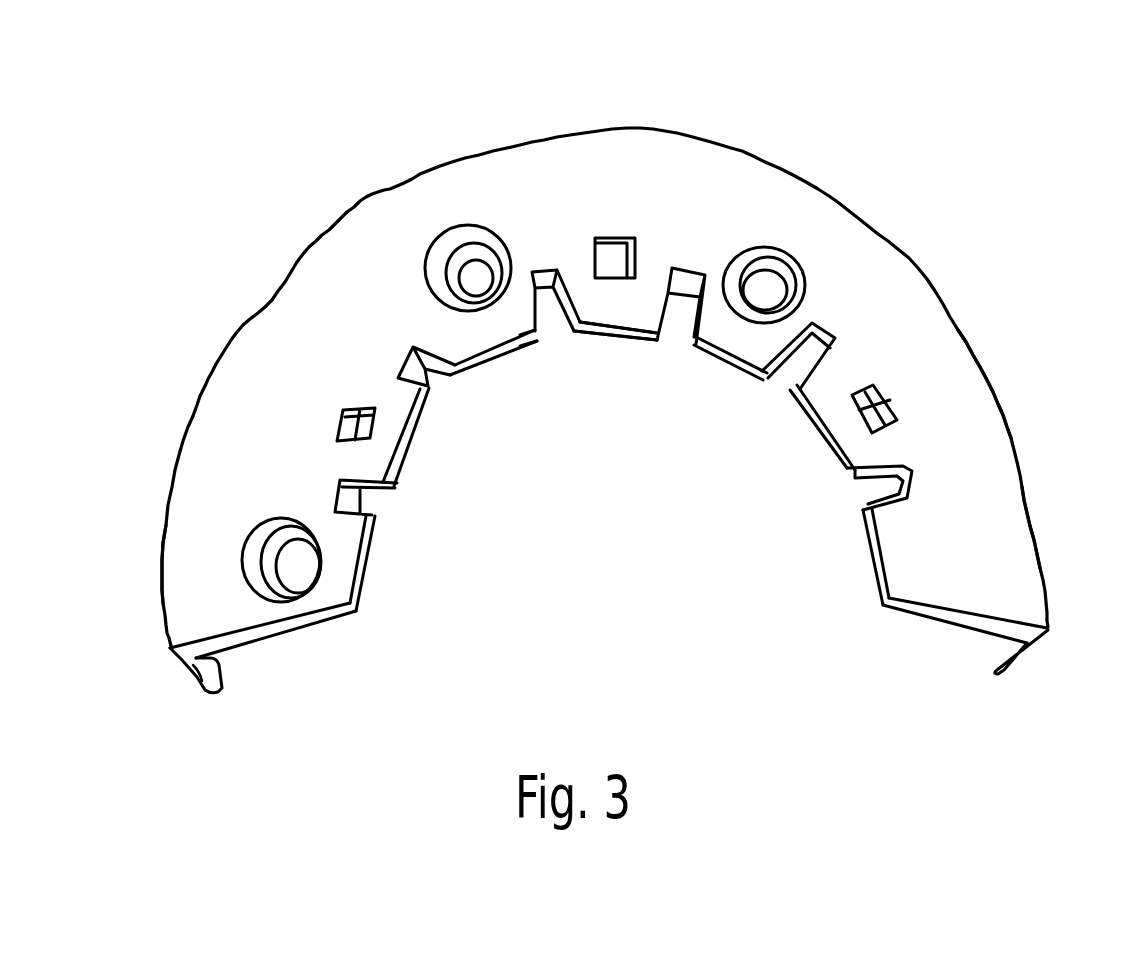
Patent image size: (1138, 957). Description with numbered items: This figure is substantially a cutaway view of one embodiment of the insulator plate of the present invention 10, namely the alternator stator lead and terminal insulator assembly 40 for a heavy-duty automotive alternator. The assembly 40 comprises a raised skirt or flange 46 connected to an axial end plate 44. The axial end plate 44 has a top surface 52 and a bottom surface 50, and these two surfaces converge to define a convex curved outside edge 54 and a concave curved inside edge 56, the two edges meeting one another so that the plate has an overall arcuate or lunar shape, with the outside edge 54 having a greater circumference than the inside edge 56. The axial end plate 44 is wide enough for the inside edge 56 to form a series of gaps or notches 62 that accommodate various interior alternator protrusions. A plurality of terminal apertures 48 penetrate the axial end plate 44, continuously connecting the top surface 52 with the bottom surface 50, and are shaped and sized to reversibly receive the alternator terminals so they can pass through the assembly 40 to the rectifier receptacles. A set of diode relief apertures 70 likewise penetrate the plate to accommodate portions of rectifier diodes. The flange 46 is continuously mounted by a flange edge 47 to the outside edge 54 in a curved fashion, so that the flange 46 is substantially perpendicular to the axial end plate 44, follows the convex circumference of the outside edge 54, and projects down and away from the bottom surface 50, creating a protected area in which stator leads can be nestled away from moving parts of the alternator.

The present invention 10 is at (625, 480).
The alternator stator lead and terminal insulator assembly 40 is at (625, 525).
The axial end plate 44 is at (918, 297).
The flange 46 is at (203, 692).
The flange edge 47 is at (163, 586).
The terminal apertures 48 is at (618, 260).
The bottom surface 50 is at (278, 638).
The top surface 52 is at (977, 453).
The outside edge 54 is at (1033, 523).
The inside edge 56 is at (870, 557).
The notches 62 is at (375, 497).
The diode relief apertures 70 is at (478, 262).